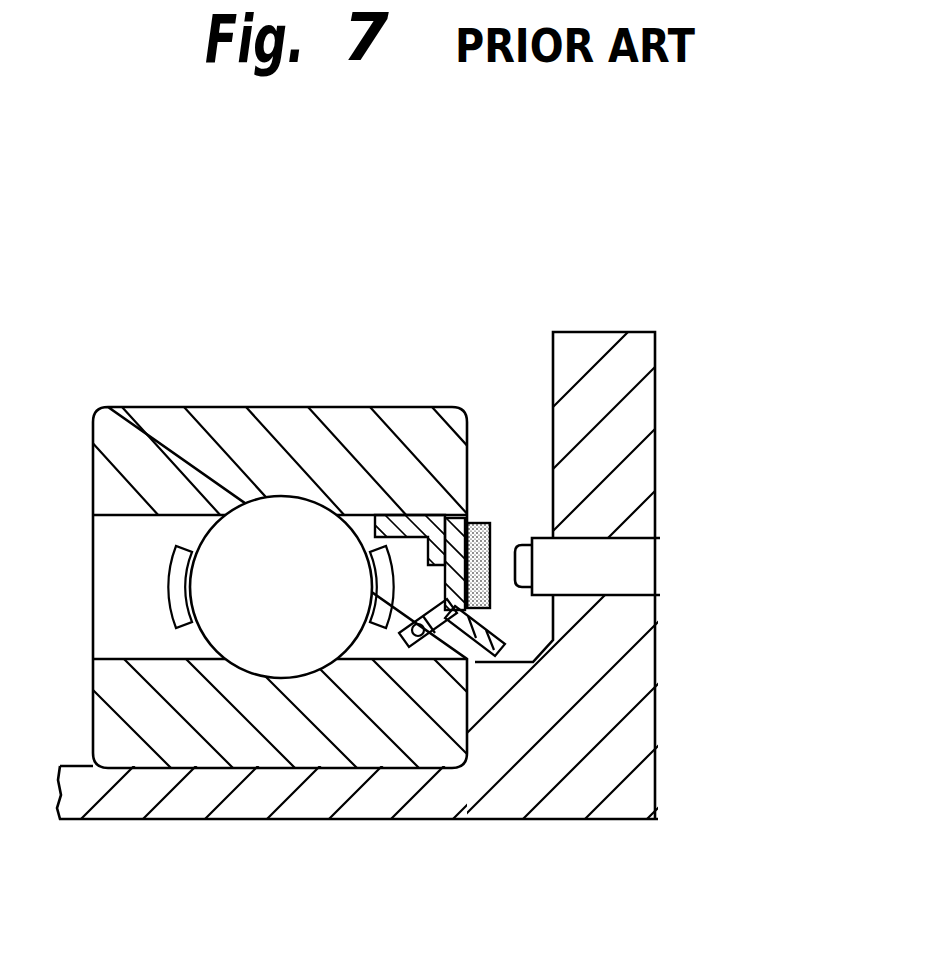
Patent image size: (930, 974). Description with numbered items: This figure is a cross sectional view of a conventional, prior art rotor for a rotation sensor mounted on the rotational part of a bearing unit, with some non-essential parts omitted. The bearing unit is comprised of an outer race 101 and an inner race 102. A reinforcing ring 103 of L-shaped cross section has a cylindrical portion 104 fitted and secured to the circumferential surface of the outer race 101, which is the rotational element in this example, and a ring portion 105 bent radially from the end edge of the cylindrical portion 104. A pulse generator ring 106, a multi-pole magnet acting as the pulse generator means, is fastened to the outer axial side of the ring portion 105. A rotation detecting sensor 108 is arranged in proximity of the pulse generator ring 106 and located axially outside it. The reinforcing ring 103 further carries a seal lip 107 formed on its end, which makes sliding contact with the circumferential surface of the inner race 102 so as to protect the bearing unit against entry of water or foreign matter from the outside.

The outer race 101 is at (237, 435).
The inner race 102 is at (250, 738).
The reinforcing ring 103 is at (401, 598).
The cylindrical portion 104 is at (398, 528).
The ring portion 105 is at (422, 535).
The pulse generator ring 106 is at (480, 522).
The seal lip 107 is at (458, 645).
The rotation detecting sensor 108 is at (623, 568).